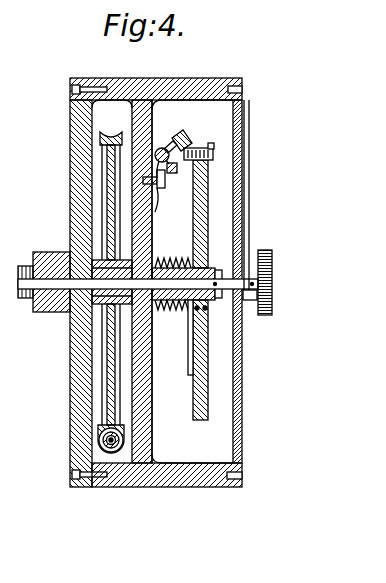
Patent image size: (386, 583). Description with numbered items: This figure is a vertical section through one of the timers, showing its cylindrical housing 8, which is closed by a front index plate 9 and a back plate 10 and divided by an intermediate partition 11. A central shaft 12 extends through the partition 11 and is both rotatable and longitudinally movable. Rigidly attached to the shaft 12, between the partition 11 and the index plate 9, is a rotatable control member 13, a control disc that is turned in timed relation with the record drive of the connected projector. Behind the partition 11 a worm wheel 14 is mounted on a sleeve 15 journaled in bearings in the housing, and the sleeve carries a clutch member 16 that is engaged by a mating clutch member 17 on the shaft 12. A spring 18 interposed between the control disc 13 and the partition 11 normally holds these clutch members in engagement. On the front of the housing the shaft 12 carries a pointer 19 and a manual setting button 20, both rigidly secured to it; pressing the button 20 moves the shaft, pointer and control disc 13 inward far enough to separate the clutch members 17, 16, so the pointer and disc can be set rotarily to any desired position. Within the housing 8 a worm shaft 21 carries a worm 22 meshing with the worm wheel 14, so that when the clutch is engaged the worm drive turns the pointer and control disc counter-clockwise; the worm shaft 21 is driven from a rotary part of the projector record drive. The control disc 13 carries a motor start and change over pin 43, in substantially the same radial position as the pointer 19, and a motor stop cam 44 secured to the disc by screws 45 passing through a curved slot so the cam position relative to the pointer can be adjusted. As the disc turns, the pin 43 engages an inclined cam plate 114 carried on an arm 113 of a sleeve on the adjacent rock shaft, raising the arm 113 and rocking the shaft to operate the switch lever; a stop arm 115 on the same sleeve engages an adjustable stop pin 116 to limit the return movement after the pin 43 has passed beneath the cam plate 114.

The housing 8 is at (192, 488).
The front index plate 9 is at (240, 437).
The back plate 10 is at (78, 385).
The intermediate partition 11 is at (147, 441).
The central shaft 12 is at (62, 292).
The rotatable control member 13 is at (204, 396).
The worm wheel 14 is at (108, 172).
The sleeve 15 is at (80, 238).
The clutch member 16 is at (62, 262).
The clutch member 17 is at (30, 270).
The spring 18 is at (173, 274).
The pointer 19 is at (247, 222).
The button 20 is at (272, 265).
The worm shaft 21 is at (100, 442).
The worm 22 is at (120, 458).
The motor start and change over pin 43 is at (192, 147).
The motor stop cam 44 is at (192, 358).
The screws 45 is at (208, 318).
The arm 113 is at (163, 148).
The inclined cam plate 114 is at (185, 130).
The stop arm 115 is at (165, 180).
The adjustable stop pin 116 is at (170, 204).